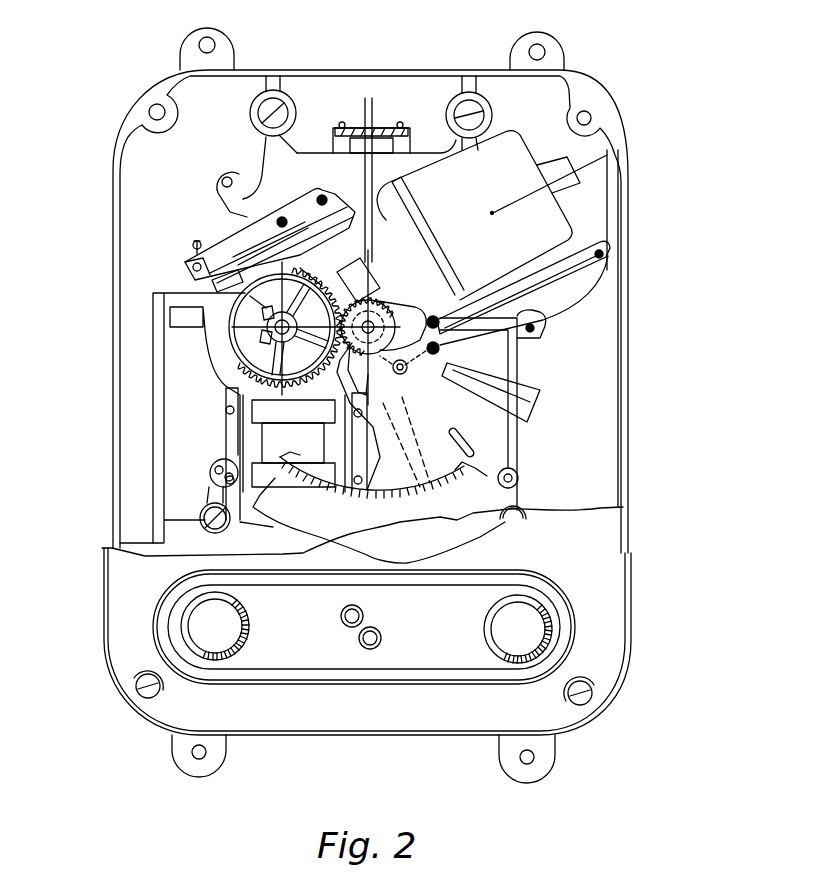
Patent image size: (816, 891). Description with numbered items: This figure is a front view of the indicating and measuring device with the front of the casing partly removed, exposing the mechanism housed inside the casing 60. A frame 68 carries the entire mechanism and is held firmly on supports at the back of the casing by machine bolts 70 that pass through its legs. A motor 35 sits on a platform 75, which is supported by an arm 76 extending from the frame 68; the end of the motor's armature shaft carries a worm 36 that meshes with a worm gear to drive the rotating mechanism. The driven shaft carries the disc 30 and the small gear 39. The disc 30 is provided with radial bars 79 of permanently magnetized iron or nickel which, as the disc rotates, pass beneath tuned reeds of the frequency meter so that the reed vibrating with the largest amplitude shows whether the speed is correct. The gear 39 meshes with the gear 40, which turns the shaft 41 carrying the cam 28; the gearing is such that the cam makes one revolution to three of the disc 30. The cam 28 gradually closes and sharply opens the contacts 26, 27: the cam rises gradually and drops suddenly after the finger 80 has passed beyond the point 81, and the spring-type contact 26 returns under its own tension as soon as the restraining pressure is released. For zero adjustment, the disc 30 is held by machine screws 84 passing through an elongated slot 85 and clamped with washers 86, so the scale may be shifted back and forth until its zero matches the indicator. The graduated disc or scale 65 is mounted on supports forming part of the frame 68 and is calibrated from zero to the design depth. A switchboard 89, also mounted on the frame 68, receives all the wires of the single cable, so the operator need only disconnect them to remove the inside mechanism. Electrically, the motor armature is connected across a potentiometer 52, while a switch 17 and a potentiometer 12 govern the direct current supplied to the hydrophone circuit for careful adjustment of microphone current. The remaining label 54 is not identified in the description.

The potentiometer 12 is at (218, 650).
The switch 17 is at (370, 650).
The contact 26 is at (188, 258).
The contact 27 is at (233, 257).
The cam 28 is at (250, 353).
The disc 30 is at (530, 431).
The motor 35 is at (547, 225).
The worm 36 is at (341, 281).
The small gear 39 is at (372, 300).
The gear 40 is at (226, 390).
The shaft 41 is at (232, 327).
The potentiometer 52 is at (507, 660).
The slot 54 is at (476, 447).
The casing 60 is at (628, 415).
The graduated disc 65 is at (622, 508).
The frame 68 is at (300, 153).
The machine bolts 70 is at (274, 100).
The platform 75 is at (607, 247).
The arm 76 is at (580, 288).
The radial bars 79 is at (467, 388).
The finger 80 is at (318, 276).
The point 81 is at (258, 303).
The machine screws 84 is at (433, 356).
The elongated slot 85 is at (400, 375).
The washers 86 is at (407, 373).
The switchboard 89 is at (153, 437).